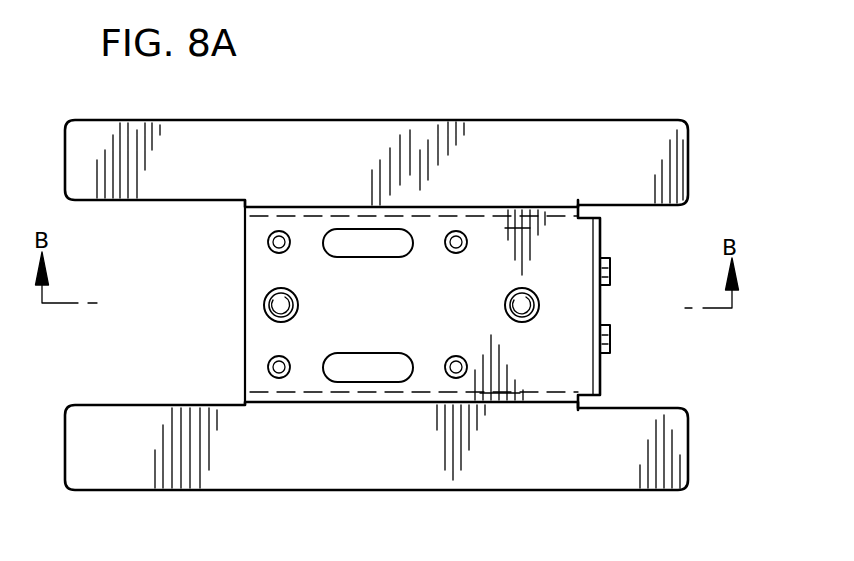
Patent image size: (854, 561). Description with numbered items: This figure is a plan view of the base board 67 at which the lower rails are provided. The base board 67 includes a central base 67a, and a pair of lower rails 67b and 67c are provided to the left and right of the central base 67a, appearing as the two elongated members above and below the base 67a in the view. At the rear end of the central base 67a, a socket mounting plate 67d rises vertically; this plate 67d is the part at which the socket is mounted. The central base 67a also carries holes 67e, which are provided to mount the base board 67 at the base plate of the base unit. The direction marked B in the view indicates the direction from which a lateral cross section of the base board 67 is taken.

The base board 67 is at (222, 114).
The central base 67a is at (245, 352).
The lower rail 67b is at (575, 146).
The lower rail 67c is at (663, 455).
The socket mounting plate 67d is at (603, 377).
The hole 67e is at (280, 232).